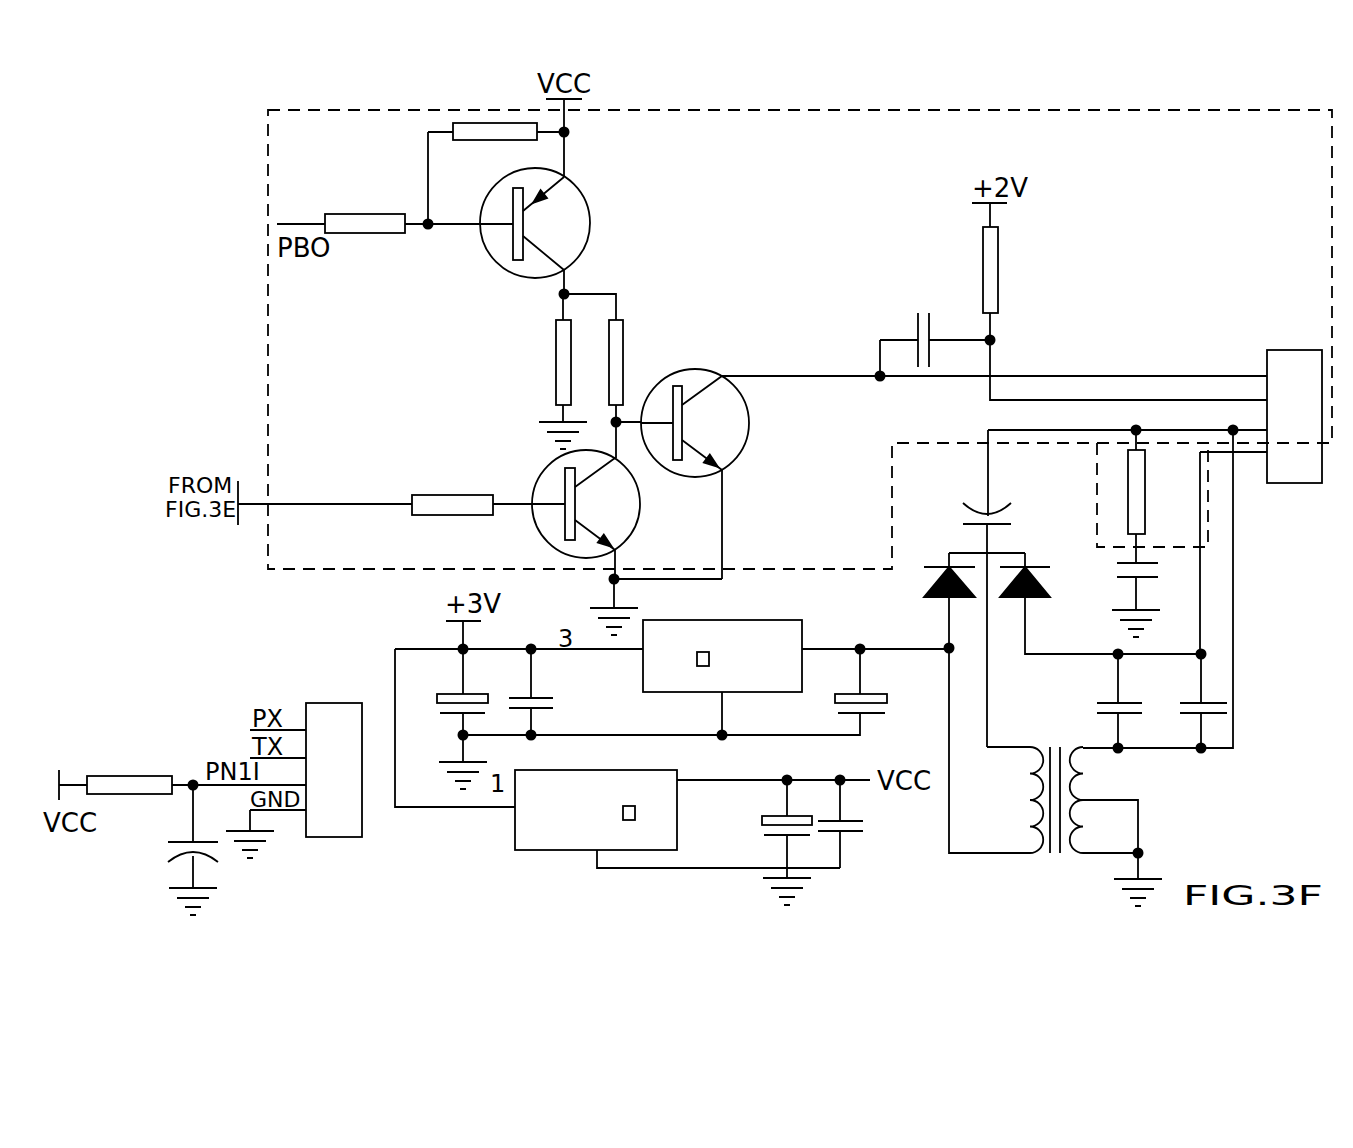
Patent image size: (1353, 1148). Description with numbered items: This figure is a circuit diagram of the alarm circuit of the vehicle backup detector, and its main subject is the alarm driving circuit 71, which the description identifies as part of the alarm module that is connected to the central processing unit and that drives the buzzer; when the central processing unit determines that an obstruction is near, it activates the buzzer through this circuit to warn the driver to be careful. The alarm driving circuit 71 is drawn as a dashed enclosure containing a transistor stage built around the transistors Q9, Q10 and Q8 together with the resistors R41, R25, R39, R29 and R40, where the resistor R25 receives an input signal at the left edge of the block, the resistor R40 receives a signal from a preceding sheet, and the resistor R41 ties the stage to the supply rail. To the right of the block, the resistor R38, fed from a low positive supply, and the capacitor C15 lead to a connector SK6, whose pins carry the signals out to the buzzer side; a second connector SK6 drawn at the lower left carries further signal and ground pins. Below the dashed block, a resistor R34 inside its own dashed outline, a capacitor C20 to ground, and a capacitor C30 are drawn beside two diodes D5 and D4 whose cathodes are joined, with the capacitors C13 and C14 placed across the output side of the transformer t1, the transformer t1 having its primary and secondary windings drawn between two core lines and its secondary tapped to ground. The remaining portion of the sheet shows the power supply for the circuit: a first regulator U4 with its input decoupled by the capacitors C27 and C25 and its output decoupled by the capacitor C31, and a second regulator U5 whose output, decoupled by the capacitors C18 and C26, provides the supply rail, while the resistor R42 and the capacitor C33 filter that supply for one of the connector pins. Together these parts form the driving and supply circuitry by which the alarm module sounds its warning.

The alarm driving circuit 71 is at (267, 338).
The resistor R41 is at (499, 173).
The resistor R25 is at (378, 208).
The transistor Q9 is at (557, 231).
The resistor R39 is at (541, 371).
The resistor R29 is at (644, 389).
The transistor Q10 is at (760, 474).
The transistor Q8 is at (591, 514).
The resistor R40 is at (452, 490).
The resistor R38 is at (1125, 313).
The capacitor C15 is at (1071, 331).
The connector SK6 is at (814, 579).
The resistor R34 is at (1152, 496).
The capacitor C20 is at (1112, 598).
The capacitor C30 is at (1018, 625).
The diode D5 is at (942, 603).
The diode D4 is at (1103, 606).
The capacitor C13 is at (1103, 704).
The capacitor C14 is at (1192, 704).
The transformer t1 is at (1055, 777).
The voltage regulator U4 is at (796, 667).
The capacitor C27 is at (449, 719).
The capacitor C25 is at (553, 695).
The capacitor C31 is at (876, 681).
The voltage regulator U5 is at (692, 807).
The capacitor C18 is at (762, 842).
The capacitor C26 is at (871, 824).
The resistor R42 is at (196, 770).
The capacitor C33 is at (166, 850).